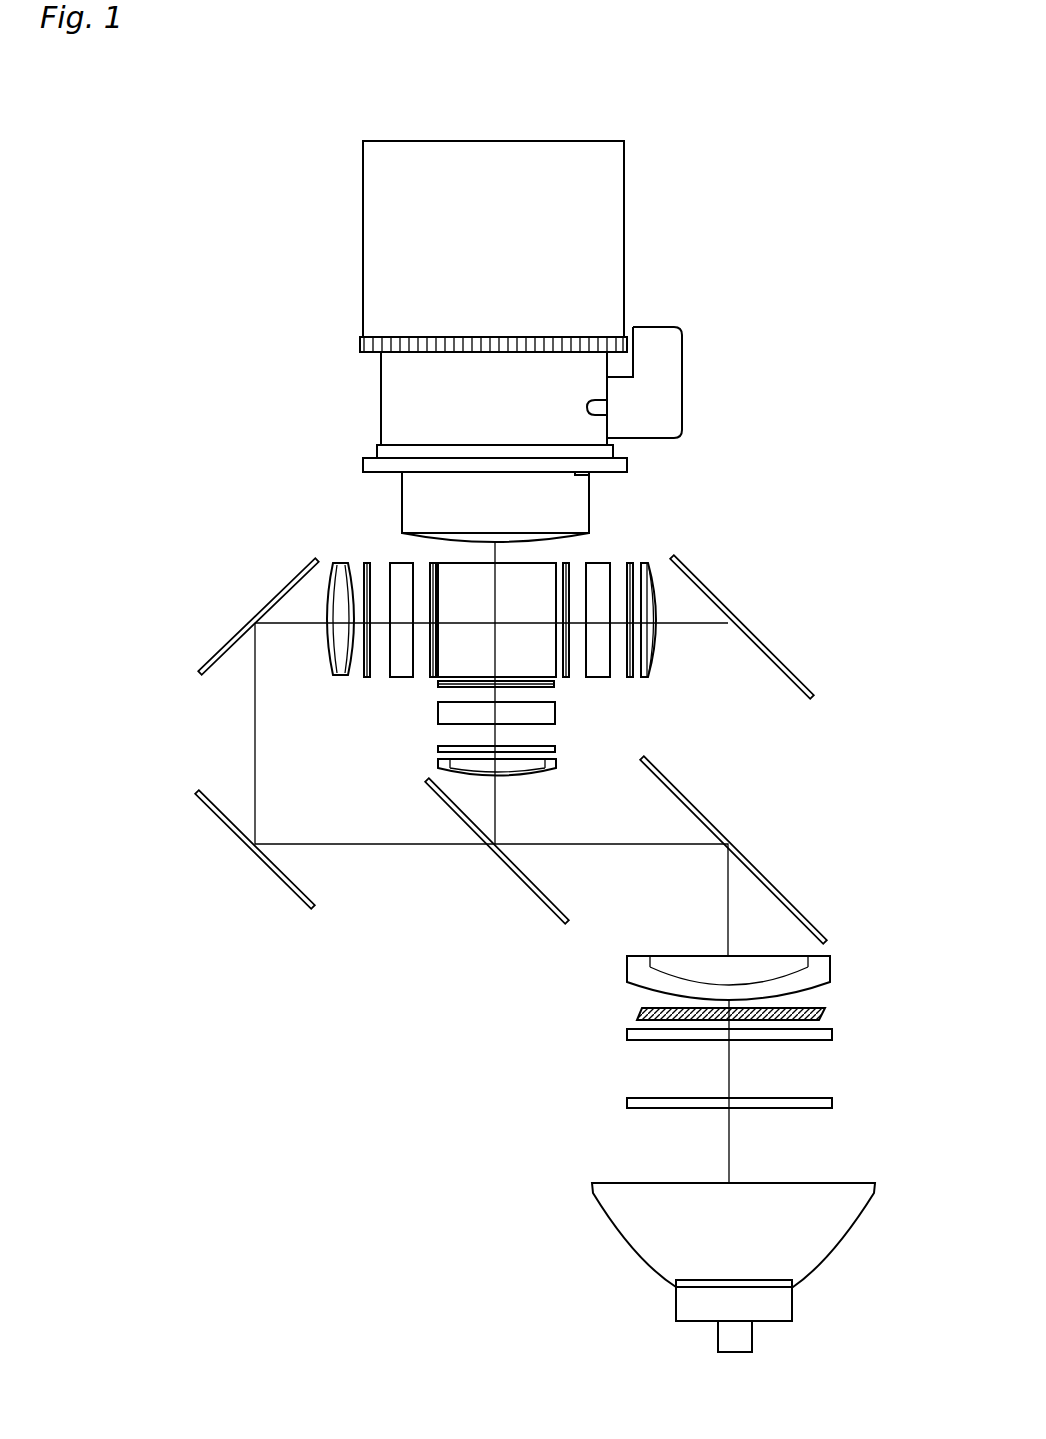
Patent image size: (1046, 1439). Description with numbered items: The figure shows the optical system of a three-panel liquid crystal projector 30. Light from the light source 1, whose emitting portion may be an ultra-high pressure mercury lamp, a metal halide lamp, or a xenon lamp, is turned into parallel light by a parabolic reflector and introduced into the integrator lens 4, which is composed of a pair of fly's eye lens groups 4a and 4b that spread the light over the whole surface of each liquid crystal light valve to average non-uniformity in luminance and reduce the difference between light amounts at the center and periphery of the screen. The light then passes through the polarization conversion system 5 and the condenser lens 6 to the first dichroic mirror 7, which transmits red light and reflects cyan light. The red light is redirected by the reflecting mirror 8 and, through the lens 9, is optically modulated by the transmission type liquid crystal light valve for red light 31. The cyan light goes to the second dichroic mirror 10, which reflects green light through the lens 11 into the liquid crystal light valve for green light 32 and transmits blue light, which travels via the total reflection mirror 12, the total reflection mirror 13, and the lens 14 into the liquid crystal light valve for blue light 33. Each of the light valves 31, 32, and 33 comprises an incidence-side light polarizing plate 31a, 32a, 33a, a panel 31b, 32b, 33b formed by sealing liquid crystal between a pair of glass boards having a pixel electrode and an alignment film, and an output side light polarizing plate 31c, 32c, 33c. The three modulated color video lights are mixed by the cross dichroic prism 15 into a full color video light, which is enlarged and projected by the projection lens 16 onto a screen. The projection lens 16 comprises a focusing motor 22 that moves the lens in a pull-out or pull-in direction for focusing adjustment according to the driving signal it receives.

The light source 1 is at (572, 1205).
The integrator lens 4 is at (692, 1062).
The fly's eye lens 4a is at (706, 1101).
The fly's eye lens 4b is at (627, 1035).
The polarization conversion system 5 is at (826, 1014).
The condenser lens 6 is at (627, 975).
The first dichroic mirror 7 is at (786, 892).
The reflecting mirror 8 is at (773, 650).
The lens 9 is at (650, 563).
The second dichroic mirror 10 is at (525, 885).
The lens 11 is at (556, 765).
The total reflection mirror 12 is at (280, 882).
The total reflection mirror 13 is at (273, 595).
The lens 14 is at (330, 560).
The cross dichroic prism 15 is at (556, 678).
The projection lens 16 is at (555, 341).
The focusing motor 22 is at (672, 347).
The three-panel liquid crystal projector 30 is at (350, 1095).
The transmission type liquid crystal light valve for red light 31 is at (627, 579).
The incidence-side light polarizing plate 31a is at (659, 597).
The panel 31b is at (600, 568).
The output side light polarizing plate 31c is at (568, 563).
The transmission type liquid crystal light valve for green light 32 is at (451, 715).
The incidence-side light polarizing plate 32a is at (471, 739).
The panel 32b is at (447, 712).
The output side light polarizing plate 32c is at (437, 684).
The transmission type liquid crystal light valve for blue light 33 is at (367, 576).
The incidence-side light polarizing plate 33a is at (366, 563).
The panel 33b is at (403, 568).
The output side light polarizing plate 33c is at (430, 563).